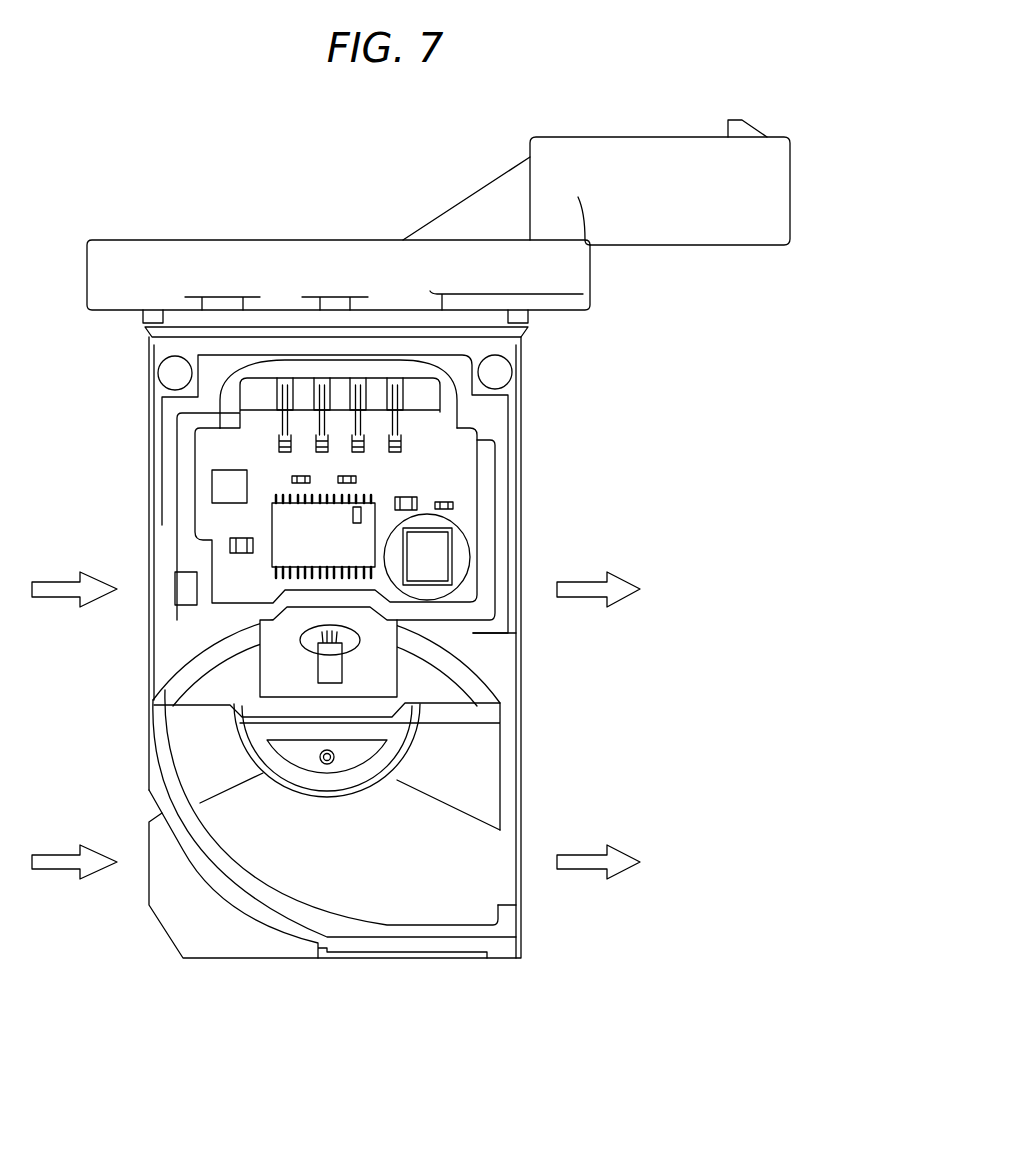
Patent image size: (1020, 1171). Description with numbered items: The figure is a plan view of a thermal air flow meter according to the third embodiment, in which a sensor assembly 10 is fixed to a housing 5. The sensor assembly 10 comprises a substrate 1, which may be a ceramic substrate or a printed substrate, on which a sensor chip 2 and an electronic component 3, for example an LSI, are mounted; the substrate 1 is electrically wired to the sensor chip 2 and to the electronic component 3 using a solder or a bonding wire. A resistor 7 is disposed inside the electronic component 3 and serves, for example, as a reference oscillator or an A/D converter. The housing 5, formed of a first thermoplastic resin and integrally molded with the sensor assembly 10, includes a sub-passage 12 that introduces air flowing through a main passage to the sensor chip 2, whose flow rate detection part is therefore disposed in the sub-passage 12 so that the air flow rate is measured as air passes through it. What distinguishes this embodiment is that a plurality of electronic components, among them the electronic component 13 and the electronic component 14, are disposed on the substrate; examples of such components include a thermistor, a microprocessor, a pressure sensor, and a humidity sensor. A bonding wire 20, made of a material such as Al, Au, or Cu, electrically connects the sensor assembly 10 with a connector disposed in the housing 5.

The substrate 1 is at (463, 485).
The sensor chip 2 is at (327, 660).
The electronic component 3 is at (305, 525).
The housing 5 is at (472, 633).
The resistor 7 is at (356, 513).
The sensor assembly 10 is at (465, 518).
The electronic component 13 is at (430, 560).
The electronic component 14 is at (356, 480).
The bonding wire 20 is at (283, 415).
The sub-passage 12 is at (413, 865).